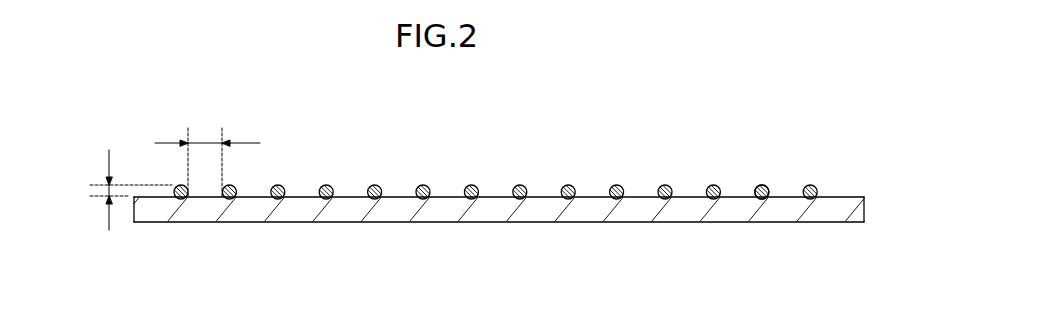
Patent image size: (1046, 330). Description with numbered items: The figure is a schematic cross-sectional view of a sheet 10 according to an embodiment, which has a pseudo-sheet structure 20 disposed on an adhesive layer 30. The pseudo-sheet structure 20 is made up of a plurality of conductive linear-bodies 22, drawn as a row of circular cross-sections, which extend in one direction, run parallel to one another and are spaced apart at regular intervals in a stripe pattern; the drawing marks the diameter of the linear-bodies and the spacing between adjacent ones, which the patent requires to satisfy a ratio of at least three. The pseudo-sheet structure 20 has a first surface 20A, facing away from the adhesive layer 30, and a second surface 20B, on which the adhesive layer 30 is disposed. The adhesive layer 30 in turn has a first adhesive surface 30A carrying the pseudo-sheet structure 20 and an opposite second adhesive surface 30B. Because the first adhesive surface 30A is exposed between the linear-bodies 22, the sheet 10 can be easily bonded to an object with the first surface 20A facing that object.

The sheet 10 is at (121, 108).
The pseudo-sheet structure 20 is at (820, 190).
The first surface 20A is at (762, 185).
The second surface 20B is at (765, 205).
The conductive linear-bodies 22 is at (617, 185).
The adhesive layer 30 is at (865, 217).
The first adhesive surface 30A is at (848, 195).
The second adhesive surface 30B is at (840, 225).